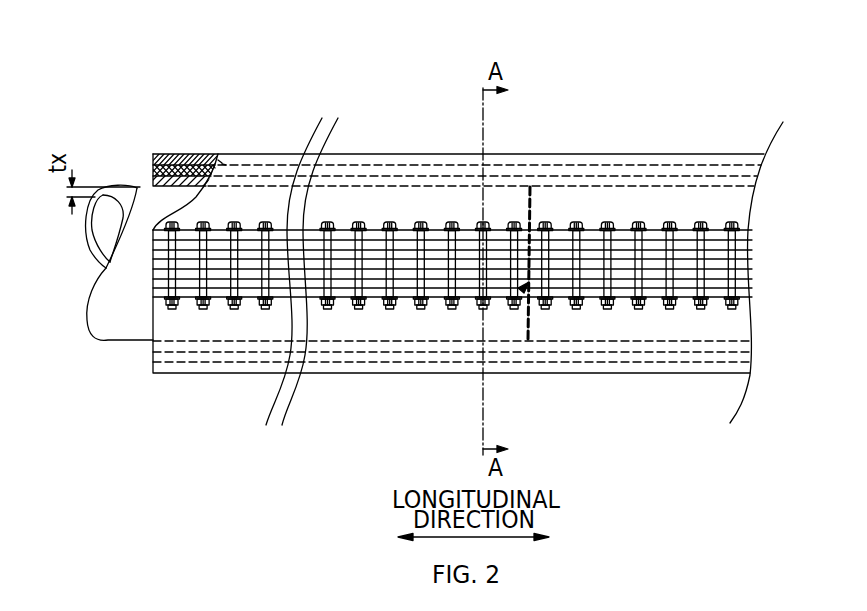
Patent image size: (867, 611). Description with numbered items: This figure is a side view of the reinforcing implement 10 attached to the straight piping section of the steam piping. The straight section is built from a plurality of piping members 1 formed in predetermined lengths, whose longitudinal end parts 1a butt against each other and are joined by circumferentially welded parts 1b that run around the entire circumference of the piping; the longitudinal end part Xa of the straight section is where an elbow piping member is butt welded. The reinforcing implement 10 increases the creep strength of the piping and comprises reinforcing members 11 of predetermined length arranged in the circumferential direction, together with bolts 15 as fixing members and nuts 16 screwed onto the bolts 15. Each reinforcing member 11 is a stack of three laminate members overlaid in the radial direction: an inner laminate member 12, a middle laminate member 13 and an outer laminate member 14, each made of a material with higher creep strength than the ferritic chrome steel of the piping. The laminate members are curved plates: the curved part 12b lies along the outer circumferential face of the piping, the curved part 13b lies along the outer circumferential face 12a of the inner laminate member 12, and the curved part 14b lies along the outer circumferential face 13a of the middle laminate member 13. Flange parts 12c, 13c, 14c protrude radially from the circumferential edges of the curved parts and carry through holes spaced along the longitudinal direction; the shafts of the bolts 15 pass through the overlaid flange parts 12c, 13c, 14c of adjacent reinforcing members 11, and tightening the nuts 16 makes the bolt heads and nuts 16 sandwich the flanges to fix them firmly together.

The piping member 1 is at (140, 197).
The end part 1a is at (517, 223).
The circumferentially welded part 1b is at (510, 303).
The reinforcing implement 10 is at (569, 139).
The reinforcing member 11 is at (248, 51).
The inner laminate member 12 is at (157, 162).
The outer circumferential face of laminate member 12 12a is at (222, 163).
The curved part 12b is at (328, 180).
The flange part 12c is at (153, 258).
The middle laminate member 13 is at (162, 170).
The outer circumferential face of laminate member 13 13a is at (213, 165).
The curved part 13b is at (375, 170).
The flange part 13c is at (153, 247).
The outer laminate member 14 is at (165, 180).
The curved part 14b is at (433, 157).
The flange part 14c is at (153, 235).
The bolt 15 is at (738, 229).
The nut 16 is at (738, 303).
The longitudinal end part Xa is at (226, 164).